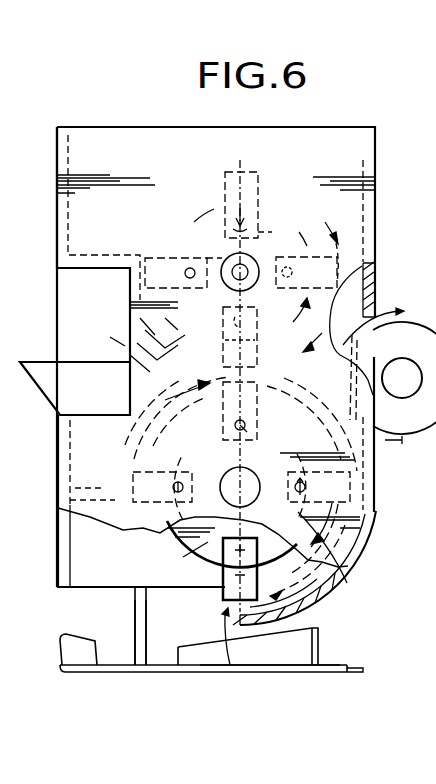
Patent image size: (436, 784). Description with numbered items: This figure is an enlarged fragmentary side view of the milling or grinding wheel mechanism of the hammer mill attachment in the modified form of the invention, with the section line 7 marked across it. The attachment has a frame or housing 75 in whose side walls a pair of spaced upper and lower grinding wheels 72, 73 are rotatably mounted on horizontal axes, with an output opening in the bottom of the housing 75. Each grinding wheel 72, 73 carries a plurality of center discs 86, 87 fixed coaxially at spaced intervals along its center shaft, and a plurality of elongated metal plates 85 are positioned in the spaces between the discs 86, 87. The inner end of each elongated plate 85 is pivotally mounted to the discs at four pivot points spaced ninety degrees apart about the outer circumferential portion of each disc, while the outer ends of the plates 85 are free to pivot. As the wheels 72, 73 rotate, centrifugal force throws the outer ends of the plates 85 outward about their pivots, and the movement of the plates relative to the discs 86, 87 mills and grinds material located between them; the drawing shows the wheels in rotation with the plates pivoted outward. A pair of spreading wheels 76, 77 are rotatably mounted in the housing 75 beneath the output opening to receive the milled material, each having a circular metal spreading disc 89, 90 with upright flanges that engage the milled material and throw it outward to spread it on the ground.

The section line 7- 7 is at (138, 127).
The upper grinding wheel 72 is at (280, 329).
The lower grinding wheel 73 is at (360, 530).
The housing 75 is at (320, 127).
The spreading wheel 76 is at (163, 675).
The spreading wheel 77 is at (295, 675).
The elongated metal plate 85 is at (187, 252).
The center disc 86 is at (182, 344).
The center disc 87 is at (328, 585).
The spreading disc 89 is at (318, 633).
The spreading disc 90 is at (377, 673).